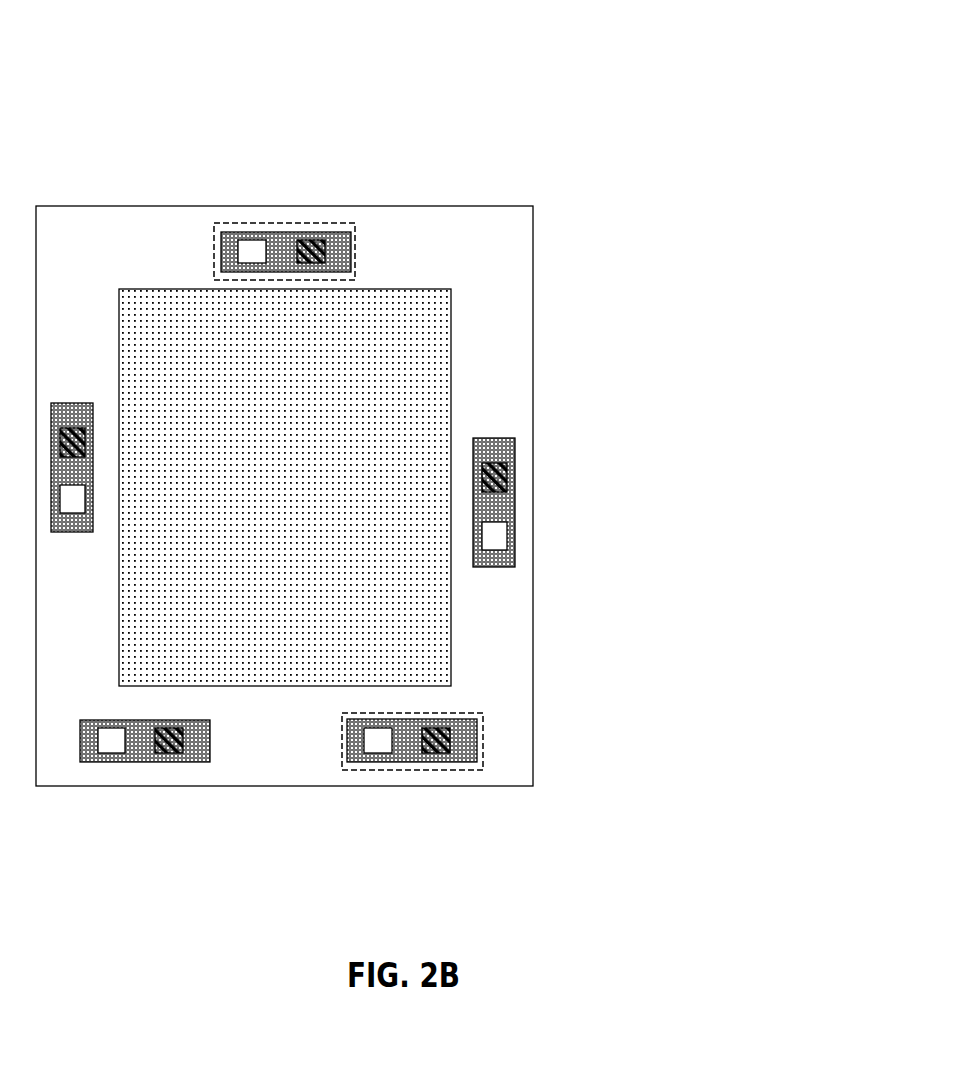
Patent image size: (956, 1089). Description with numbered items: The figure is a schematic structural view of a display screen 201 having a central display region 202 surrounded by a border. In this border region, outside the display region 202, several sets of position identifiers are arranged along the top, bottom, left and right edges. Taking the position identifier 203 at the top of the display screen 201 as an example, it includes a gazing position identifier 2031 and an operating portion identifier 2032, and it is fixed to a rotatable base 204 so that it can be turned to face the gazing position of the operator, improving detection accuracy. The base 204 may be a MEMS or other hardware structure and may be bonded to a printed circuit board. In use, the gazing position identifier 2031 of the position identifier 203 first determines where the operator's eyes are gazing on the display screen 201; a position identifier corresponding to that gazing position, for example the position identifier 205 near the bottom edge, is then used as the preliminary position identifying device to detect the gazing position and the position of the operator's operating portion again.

The display screen 201 is at (533, 732).
The display region 202 is at (448, 348).
The position identifier 203 is at (325, 145).
The gazing position identifier 2031 is at (243, 245).
The operating portion identifier 2032 is at (318, 240).
The rotatable base 204 is at (340, 238).
The position identifier 205 is at (378, 770).